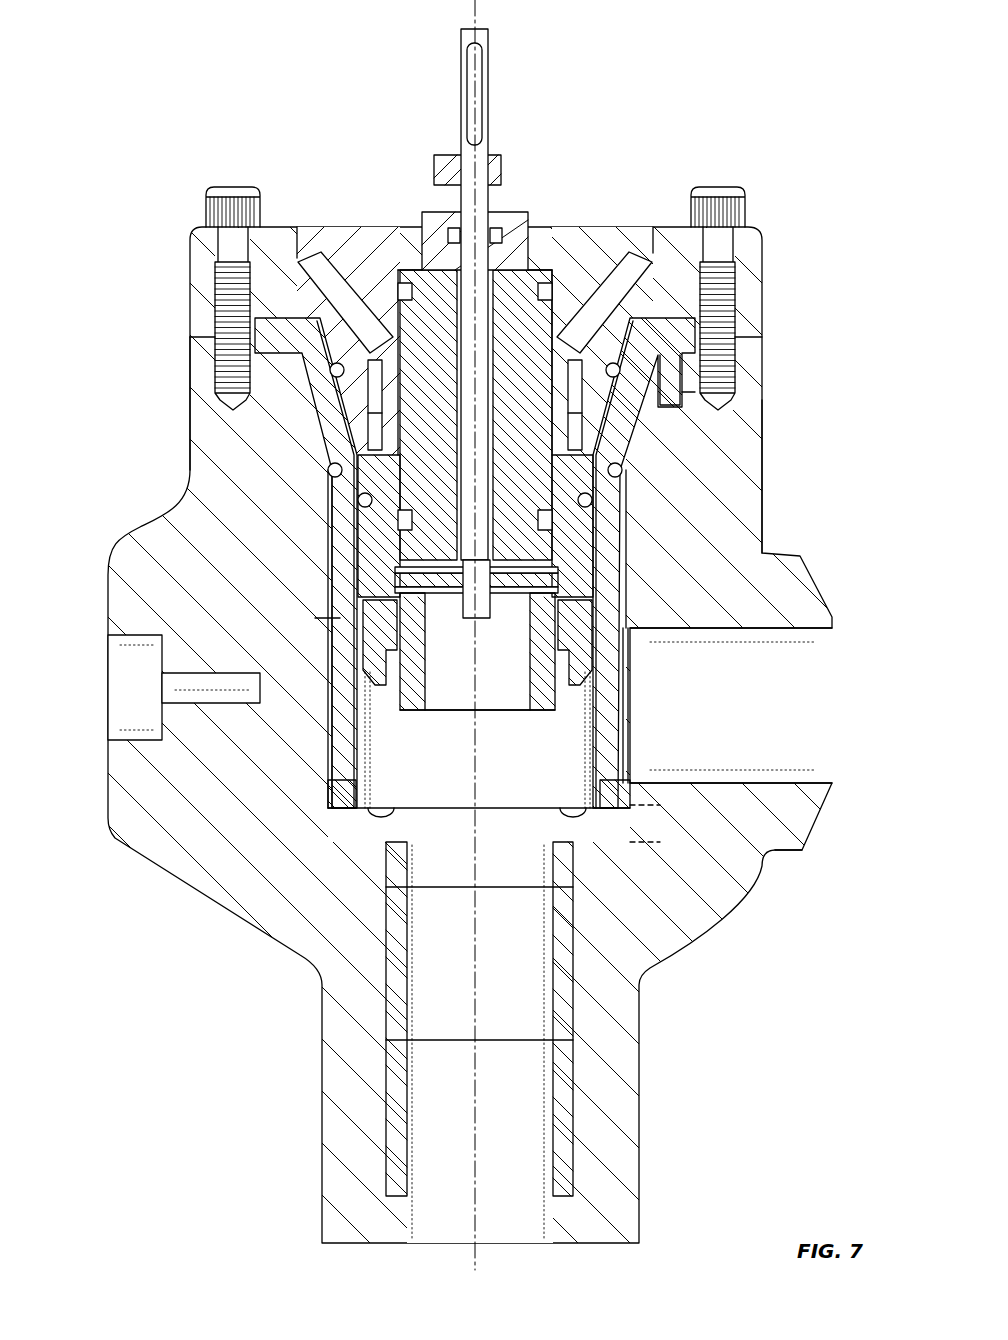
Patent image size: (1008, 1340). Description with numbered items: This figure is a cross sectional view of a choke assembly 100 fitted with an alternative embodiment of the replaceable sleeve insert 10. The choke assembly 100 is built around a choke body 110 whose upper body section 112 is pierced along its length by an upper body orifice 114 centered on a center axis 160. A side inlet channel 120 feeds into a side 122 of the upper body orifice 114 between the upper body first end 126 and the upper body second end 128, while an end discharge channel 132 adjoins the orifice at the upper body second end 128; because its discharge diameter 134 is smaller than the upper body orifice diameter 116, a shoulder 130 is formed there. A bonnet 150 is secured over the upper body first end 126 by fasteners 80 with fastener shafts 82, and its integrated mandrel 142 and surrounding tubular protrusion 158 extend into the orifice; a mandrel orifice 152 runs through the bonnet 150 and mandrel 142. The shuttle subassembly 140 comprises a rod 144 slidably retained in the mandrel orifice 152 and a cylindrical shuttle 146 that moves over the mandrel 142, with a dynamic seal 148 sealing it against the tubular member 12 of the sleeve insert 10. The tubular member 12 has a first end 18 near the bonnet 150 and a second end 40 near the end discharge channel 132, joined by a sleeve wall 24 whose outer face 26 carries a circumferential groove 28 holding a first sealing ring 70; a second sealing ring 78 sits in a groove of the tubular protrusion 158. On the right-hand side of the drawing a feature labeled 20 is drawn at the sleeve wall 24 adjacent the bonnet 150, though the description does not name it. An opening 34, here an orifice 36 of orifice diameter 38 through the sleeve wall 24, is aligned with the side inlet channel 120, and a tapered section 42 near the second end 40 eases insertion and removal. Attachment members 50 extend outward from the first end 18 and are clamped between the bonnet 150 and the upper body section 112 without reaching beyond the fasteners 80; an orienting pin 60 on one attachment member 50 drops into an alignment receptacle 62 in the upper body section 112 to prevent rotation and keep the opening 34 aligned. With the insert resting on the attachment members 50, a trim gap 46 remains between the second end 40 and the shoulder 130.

The choke assembly 100 is at (134, 56).
The choke body 110 is at (118, 600).
The upper body section 112 is at (745, 410).
The side inlet channel 120 is at (810, 690).
The side of the upper body orifice 122 is at (725, 485).
The upper body first end 126 is at (208, 336).
The upper body second end 128 is at (697, 850).
The shoulder 130 is at (337, 830).
The end discharge channel 132 is at (457, 1112).
The discharge diameter 134 is at (407, 864).
The upper body orifice diameter 116 is at (328, 823).
The upper body orifice 114 is at (477, 734).
The shuttle subassembly 140 is at (430, 183).
The mandrel 142 is at (545, 535).
The rod 144 is at (458, 212).
The shuttle 146 is at (575, 680).
The dynamic seal 148 is at (596, 500).
The bonnet 150 is at (382, 246).
The mandrel orifice 152 is at (512, 230).
The tubular protrusion 158 is at (600, 390).
The center axis 160 is at (479, 14).
The fasteners 80 is at (206, 193).
The fastener shafts 82 is at (737, 275).
The second sealing ring 78 is at (300, 380).
The first sealing ring 70 is at (330, 468).
The outer face 26 is at (323, 567).
The circumferential groove 28 is at (332, 506).
The sleeve wall 24 is at (335, 622).
The first end 18 is at (270, 318).
The attachment member 50 is at (337, 276).
The sleeve 20 is at (622, 424).
The orienting pin 60 is at (703, 408).
The alignment receptacle 62 is at (712, 465).
The replaceable sleeve insert 10 is at (342, 773).
The tubular member 12 is at (345, 733).
The tapered section 42 is at (338, 803).
The second end 40 is at (390, 805).
The opening 34 is at (634, 650).
The orifice 36 is at (630, 740).
The orifice diameter 38 is at (612, 628).
The trim gap 46 is at (663, 805).